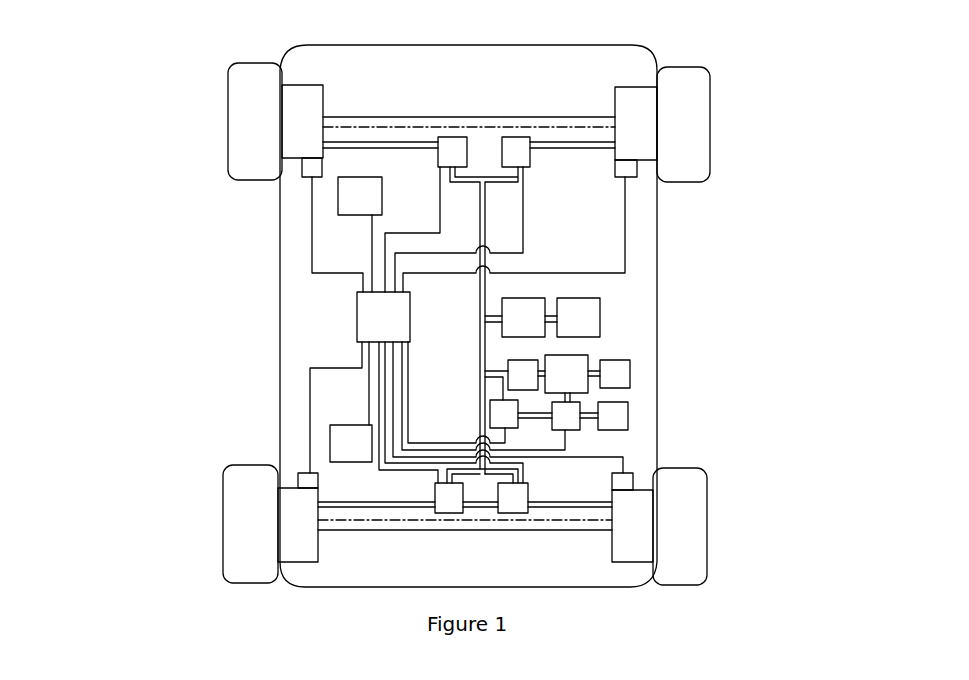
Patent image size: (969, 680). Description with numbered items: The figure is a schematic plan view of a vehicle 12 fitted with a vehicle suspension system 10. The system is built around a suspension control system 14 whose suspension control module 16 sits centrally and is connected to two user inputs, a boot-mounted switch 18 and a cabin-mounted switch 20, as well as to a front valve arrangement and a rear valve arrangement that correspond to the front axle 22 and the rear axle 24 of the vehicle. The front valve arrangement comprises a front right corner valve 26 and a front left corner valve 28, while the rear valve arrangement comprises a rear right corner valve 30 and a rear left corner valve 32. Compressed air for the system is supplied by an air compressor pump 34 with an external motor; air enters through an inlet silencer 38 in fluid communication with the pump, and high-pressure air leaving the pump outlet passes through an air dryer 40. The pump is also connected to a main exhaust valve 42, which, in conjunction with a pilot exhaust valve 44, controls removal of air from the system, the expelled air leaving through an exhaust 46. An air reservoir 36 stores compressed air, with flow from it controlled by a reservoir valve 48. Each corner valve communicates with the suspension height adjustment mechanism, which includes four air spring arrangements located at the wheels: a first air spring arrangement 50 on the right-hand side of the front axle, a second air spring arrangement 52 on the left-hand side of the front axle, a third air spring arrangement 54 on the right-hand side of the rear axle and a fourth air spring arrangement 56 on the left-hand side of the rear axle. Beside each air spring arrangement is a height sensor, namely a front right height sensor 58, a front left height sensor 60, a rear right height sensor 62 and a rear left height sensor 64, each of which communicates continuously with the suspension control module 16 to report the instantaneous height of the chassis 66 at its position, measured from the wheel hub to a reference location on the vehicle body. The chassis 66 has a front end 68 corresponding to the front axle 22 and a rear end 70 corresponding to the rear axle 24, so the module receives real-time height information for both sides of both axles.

The vehicle suspension system 10 is at (478, 299).
The vehicle 12 is at (476, 299).
The suspension control system 14 is at (414, 315).
The suspension control module 16 is at (386, 316).
The boot-mounted switch 18 is at (338, 440).
The cabin-mounted switch 20 is at (360, 200).
The front axle 22 is at (390, 122).
The rear axle 24 is at (553, 528).
The front right corner valve 26 is at (513, 147).
The front left corner valve 28 is at (455, 148).
The rear right corner valve 30 is at (510, 507).
The rear left corner valve 32 is at (447, 500).
The air compressor pump 34 is at (572, 367).
The air reservoir 36 is at (577, 312).
The inlet silencer 38 is at (615, 378).
The air dryer 40 is at (520, 372).
The main exhaust valve 42 is at (568, 423).
The pilot exhaust valve 44 is at (508, 413).
The exhaust 46 is at (618, 418).
The reservoir valve 48 is at (527, 308).
The first air spring arrangement 50 is at (636, 124).
The second air spring arrangement 52 is at (313, 122).
The third air spring arrangement 54 is at (630, 525).
The fourth air spring arrangement 56 is at (300, 525).
The front right height sensor 58 is at (625, 167).
The front left height sensor 60 is at (310, 166).
The rear right height sensor 62 is at (620, 483).
The rear left height sensor 64 is at (305, 479).
The chassis 66 is at (280, 243).
The front end 68 is at (205, 139).
The rear end 70 is at (160, 511).